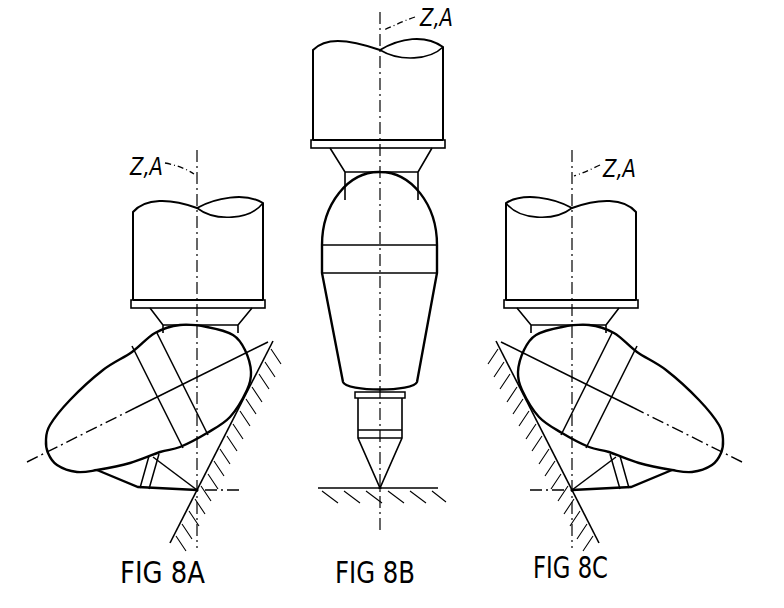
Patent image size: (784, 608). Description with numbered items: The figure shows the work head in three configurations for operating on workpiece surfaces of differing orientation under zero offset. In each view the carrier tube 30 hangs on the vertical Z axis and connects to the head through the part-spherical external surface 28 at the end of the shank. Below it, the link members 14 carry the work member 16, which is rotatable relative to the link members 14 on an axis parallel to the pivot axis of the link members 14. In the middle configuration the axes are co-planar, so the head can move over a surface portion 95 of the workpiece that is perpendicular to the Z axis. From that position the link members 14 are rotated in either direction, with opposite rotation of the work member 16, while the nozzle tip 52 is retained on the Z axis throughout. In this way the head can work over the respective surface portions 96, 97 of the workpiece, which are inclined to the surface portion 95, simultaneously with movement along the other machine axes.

In FIG. 8A, the link member 14 is at (122, 373).
In FIG. 8B, the link member 14 is at (407, 334).
In FIG. 8C, the link member 14 is at (661, 388).
In FIG. 8A, the work member 16 is at (134, 498).
In FIG. 8B, the work member 16 is at (355, 452).
In FIG. 8C, the work member 16 is at (647, 485).
In FIG. 8A, the part-spherical external surface 28 is at (170, 314).
In FIG. 8B, the part-spherical external surface 28 is at (352, 158).
In FIG. 8C, the part-spherical external surface 28 is at (538, 314).
In FIG. 8A, the carrier tube 30 is at (150, 237).
In FIG. 8B, the carrier tube 30 is at (340, 67).
In FIG. 8C, the carrier tube 30 is at (620, 238).
In FIG. 8A, the nozzle tip 52 is at (200, 494).
In FIG. 8B, the nozzle tip 52 is at (383, 489).
In FIG. 8C, the nozzle tip 52 is at (570, 490).
In FIG. 8B, the surface portion 95 is at (418, 488).
In FIG. 8A, the surface portion 96 is at (207, 464).
In FIG. 8C, the surface portion 97 is at (558, 450).